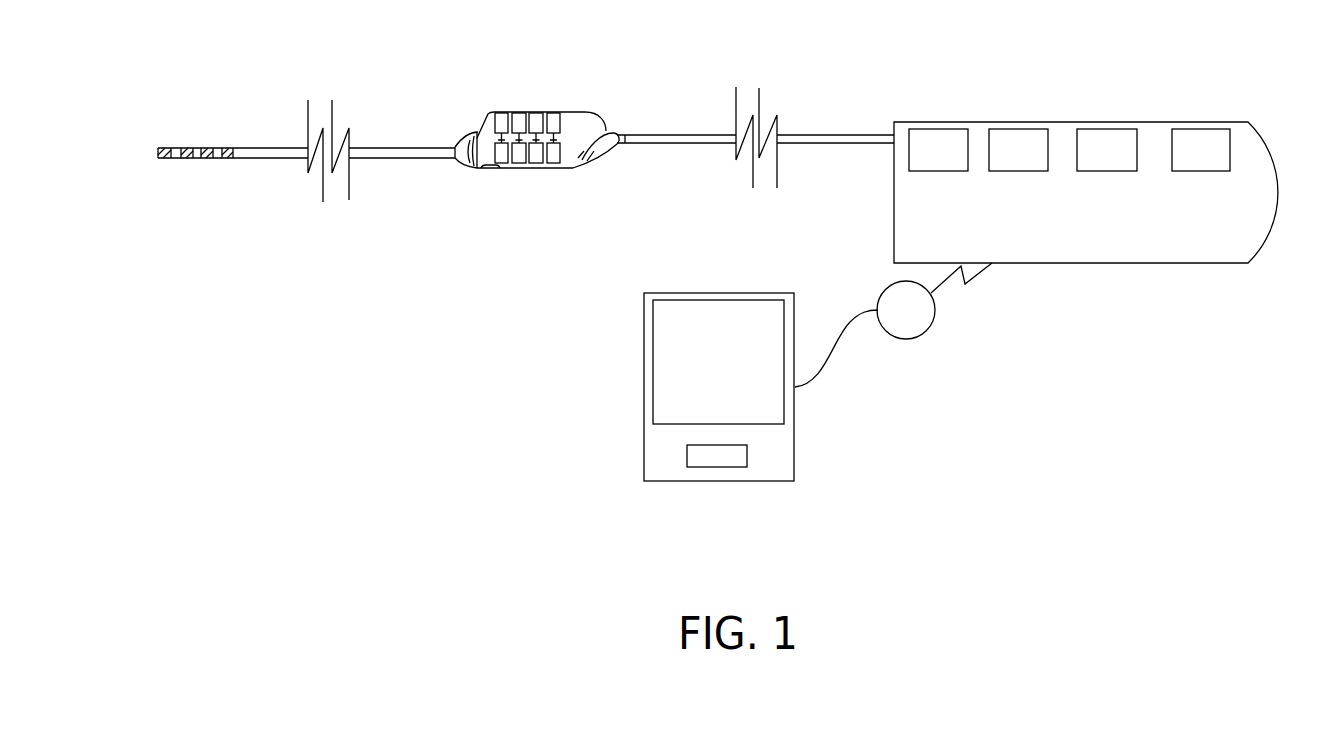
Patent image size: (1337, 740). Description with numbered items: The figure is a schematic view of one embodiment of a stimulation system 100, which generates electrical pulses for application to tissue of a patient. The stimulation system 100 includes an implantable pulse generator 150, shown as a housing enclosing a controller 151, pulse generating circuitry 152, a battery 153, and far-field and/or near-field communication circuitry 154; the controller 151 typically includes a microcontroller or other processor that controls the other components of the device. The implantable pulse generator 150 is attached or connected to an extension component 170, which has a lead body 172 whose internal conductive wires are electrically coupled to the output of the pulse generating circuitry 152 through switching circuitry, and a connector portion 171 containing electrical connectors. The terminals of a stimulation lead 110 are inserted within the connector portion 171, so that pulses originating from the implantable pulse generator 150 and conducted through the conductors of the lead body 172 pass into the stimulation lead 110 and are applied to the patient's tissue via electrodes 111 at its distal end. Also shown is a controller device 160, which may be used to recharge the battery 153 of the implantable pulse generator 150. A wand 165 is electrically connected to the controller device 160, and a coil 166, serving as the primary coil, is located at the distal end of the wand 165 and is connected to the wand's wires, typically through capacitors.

The stimulation system 100 is at (462, 370).
The stimulation lead 110 is at (260, 158).
The electrodes 111 is at (205, 158).
The extension component 170 is at (609, 128).
The connector portion 171 is at (537, 112).
The lead body 172 is at (662, 145).
The implantable pulse generator 150 is at (1086, 216).
The controller 151 is at (960, 162).
The pulse generating circuitry 152 is at (1040, 162).
The battery 153 is at (1128, 162).
The communication circuitry 154 is at (1222, 162).
The controller device 160 is at (752, 293).
The wand 165 is at (848, 313).
The coil 166 is at (906, 339).